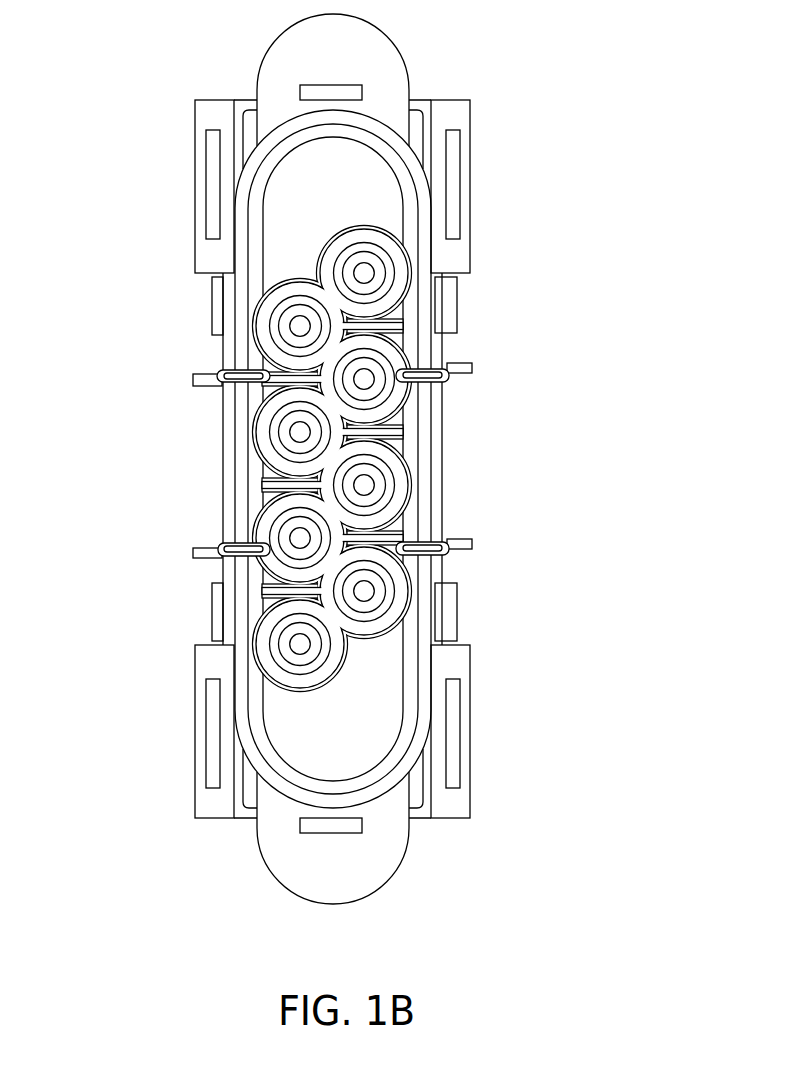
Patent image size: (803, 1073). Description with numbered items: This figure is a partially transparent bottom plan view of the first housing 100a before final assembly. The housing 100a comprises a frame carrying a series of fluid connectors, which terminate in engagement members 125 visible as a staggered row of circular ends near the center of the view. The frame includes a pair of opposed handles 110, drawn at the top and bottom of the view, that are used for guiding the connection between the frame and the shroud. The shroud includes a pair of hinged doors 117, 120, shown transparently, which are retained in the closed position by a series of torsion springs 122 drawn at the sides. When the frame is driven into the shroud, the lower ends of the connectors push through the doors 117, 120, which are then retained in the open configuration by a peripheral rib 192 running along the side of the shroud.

The first housing 100a is at (125, 165).
The handles 110 is at (384, 58).
The hinged door 120 is at (413, 451).
The hinged door 117 is at (255, 487).
The peripheral rib 192 is at (432, 408).
The engagement members 125 is at (371, 486).
The torsion springs 122 is at (203, 374).